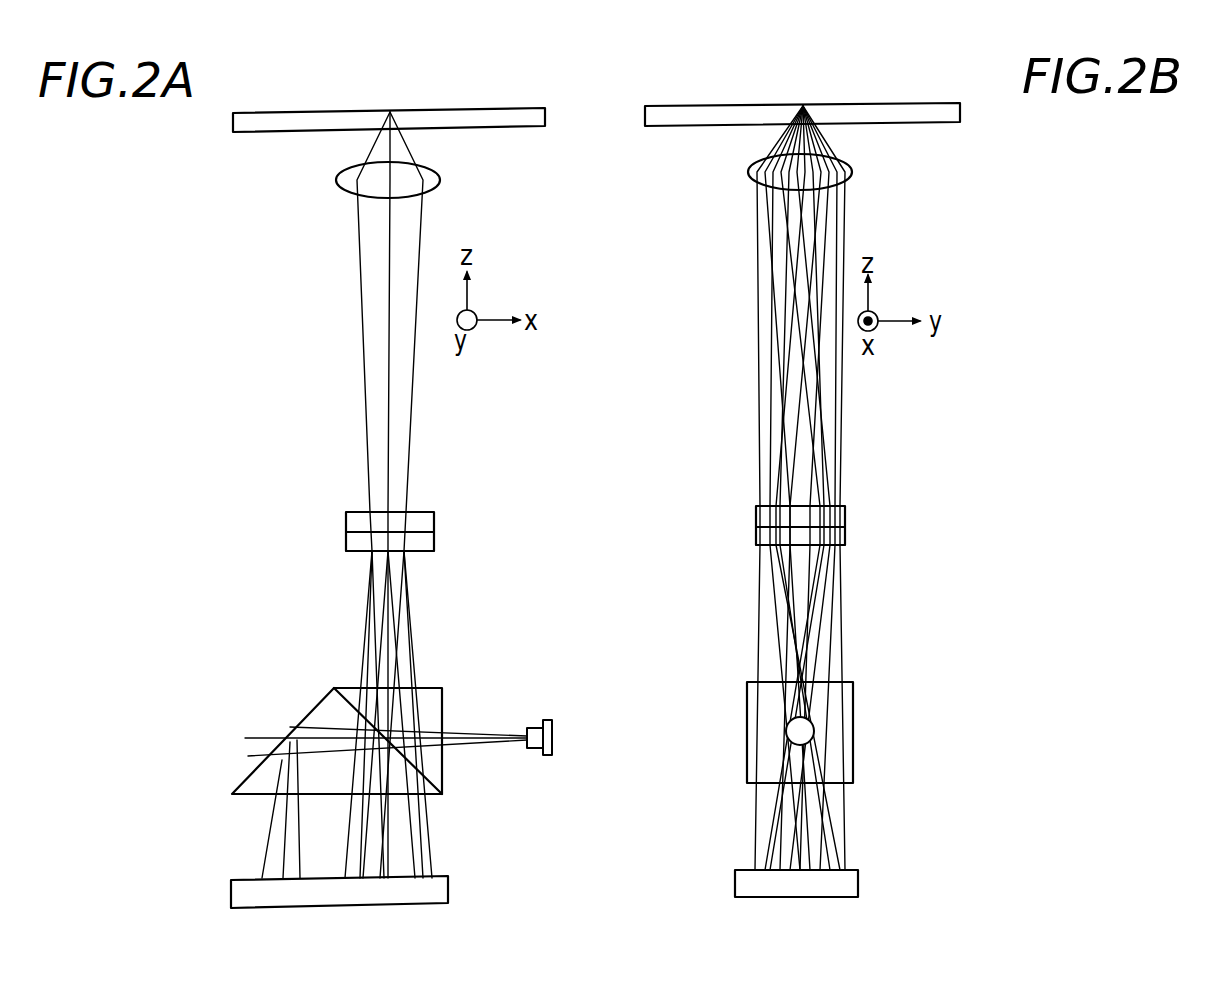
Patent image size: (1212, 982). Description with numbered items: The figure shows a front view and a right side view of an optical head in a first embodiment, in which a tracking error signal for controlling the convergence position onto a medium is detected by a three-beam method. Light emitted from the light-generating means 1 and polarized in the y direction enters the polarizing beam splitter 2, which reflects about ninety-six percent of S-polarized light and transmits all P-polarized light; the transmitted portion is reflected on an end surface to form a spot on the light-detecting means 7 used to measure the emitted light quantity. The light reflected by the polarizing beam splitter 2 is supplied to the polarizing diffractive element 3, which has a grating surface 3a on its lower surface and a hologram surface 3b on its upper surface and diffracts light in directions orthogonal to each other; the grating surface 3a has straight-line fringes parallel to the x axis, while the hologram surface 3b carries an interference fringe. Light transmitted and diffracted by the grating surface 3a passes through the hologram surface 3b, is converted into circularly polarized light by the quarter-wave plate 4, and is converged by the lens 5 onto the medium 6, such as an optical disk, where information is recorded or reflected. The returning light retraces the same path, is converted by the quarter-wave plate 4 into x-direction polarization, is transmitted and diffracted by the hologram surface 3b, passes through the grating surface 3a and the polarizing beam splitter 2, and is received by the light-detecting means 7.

In FIG. 2A, the light-generating means 1 is at (553, 736).
In FIG. 2B, the light-generating means 1 is at (790, 731).
In FIG. 2A, the polarizing beam splitter 2 is at (437, 690).
In FIG. 2B, the polarizing beam splitter 2 is at (750, 685).
In FIG. 2A, the polarizing diffractive element 3 is at (436, 541).
In FIG. 2B, the polarizing diffractive element 3 is at (753, 535).
In FIG. 2A, the grating surface 3a is at (358, 552).
In FIG. 2B, the grating surface 3a is at (840, 545).
In FIG. 2A, the hologram surface 3b is at (360, 532).
In FIG. 2B, the hologram surface 3b is at (830, 527).
In FIG. 2A, the quarter-wave plate 4 is at (400, 512).
In FIG. 2B, the quarter-wave plate 4 is at (757, 506).
In FIG. 2A, the lens 5 is at (440, 179).
In FIG. 2B, the lens 5 is at (640, 232).
In FIG. 2A, the medium 6 is at (470, 109).
In FIG. 2B, the medium 6 is at (728, 104).
In FIG. 2A, the light-detecting means 7 is at (448, 879).
In FIG. 2B, the light-detecting means 7 is at (735, 880).